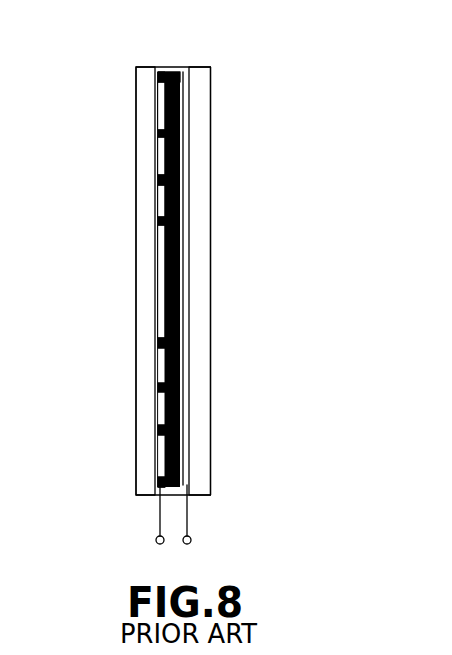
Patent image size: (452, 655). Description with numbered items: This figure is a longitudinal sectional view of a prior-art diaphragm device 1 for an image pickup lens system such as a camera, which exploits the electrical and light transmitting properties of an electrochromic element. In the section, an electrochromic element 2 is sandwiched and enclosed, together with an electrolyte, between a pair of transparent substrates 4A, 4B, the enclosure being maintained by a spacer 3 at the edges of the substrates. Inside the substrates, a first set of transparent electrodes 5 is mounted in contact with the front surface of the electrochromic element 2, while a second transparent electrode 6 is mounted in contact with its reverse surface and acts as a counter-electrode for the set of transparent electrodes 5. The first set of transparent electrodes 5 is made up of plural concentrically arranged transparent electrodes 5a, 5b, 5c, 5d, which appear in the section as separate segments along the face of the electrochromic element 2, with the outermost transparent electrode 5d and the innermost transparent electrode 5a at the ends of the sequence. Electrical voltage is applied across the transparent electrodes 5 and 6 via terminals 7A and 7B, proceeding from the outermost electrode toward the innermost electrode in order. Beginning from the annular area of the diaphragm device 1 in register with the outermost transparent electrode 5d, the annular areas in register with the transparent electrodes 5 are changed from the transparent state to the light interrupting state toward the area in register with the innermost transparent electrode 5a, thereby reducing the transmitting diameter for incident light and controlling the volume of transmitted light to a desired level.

The diaphragm device 1 is at (315, 75).
The electrochromic element 2 is at (180, 145).
The spacer 3 is at (170, 73).
The transparent substrate 4A is at (142, 76).
The transparent substrate 4B is at (200, 76).
The first set of transparent electrodes 5 is at (58, 90).
The innermost transparent electrode 5a is at (162, 286).
The transparent electrode 5b is at (162, 200).
The transparent electrode 5c is at (162, 157).
The outermost transparent electrode 5d is at (162, 105).
The second transparent electrode 6 is at (183, 282).
The terminal 7A is at (156, 540).
The terminal 7B is at (191, 540).